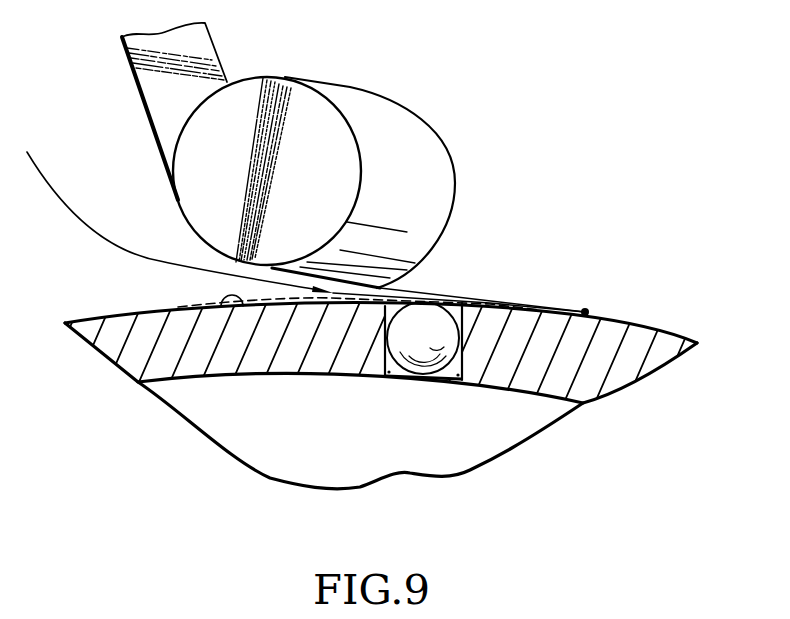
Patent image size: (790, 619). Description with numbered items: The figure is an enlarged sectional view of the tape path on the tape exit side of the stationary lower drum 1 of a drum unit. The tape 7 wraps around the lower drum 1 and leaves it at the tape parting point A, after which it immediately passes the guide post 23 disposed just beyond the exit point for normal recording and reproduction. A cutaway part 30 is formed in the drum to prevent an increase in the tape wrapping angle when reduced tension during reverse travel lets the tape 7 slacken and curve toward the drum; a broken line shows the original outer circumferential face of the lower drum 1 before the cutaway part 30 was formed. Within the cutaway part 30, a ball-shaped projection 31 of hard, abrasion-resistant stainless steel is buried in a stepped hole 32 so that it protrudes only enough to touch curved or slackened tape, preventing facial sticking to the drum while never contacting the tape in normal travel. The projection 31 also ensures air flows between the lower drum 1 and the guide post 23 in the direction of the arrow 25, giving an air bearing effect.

The lower drum 1 is at (613, 378).
The tape 7 is at (210, 53).
The guide post 23 is at (313, 102).
The arrow 25 is at (60, 195).
The cutaway part 30 is at (218, 298).
The projections 31 is at (438, 314).
The stepped hole 32 is at (385, 378).
The tape parting point A is at (587, 305).